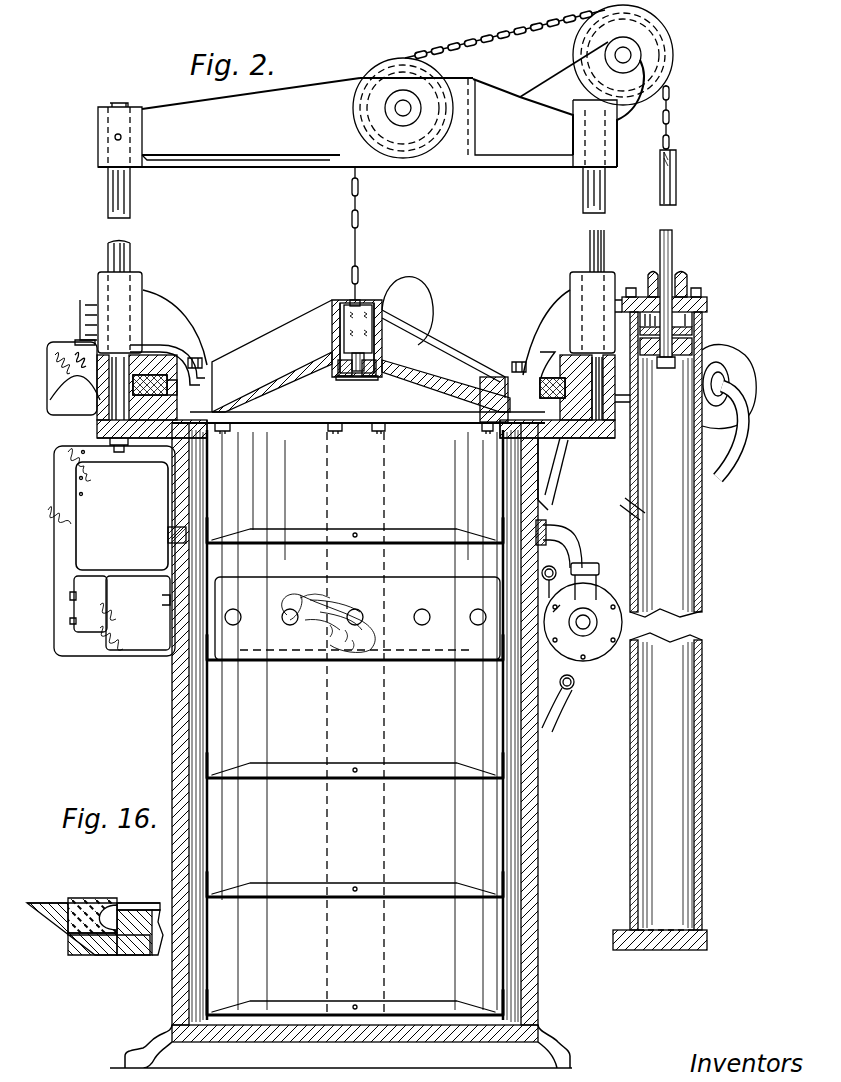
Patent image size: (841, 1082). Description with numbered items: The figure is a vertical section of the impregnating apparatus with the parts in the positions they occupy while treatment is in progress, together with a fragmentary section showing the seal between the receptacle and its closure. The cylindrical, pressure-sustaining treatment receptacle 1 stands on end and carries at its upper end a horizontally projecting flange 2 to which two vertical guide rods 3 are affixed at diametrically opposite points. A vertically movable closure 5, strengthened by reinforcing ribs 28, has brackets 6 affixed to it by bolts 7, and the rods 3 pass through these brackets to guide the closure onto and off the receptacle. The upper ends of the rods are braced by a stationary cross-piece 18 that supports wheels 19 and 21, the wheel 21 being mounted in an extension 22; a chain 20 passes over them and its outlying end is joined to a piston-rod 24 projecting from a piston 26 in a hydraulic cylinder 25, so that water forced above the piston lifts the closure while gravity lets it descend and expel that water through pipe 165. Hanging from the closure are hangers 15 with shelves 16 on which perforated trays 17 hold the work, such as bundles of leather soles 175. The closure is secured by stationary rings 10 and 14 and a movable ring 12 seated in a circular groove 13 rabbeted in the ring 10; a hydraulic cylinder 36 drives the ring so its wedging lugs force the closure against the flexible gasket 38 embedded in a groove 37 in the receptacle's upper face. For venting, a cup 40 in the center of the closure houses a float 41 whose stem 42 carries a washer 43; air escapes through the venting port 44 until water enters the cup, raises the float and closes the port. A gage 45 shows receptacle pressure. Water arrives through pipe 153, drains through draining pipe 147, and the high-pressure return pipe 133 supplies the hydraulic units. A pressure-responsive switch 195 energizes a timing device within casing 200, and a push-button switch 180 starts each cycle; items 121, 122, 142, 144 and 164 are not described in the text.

In FIG. 2, the treatment receptacle 1 is at (540, 815).
In FIG. 16, the treatment receptacle 1 is at (143, 910).
In FIG. 2, the flange 2 is at (142, 438).
In FIG. 16, the flange 2 is at (32, 903).
In FIG. 2, the guide rods 3 is at (110, 258).
In FIG. 2, the closure 5 is at (285, 385).
In FIG. 2, the brackets 6 is at (160, 313).
In FIG. 2, the bolts 7 is at (204, 358).
In FIG. 2, the stationary ring 10 is at (80, 410).
In FIG. 2, the movable ring 12 is at (180, 360).
In FIG. 2, the circular groove 13 is at (565, 480).
In FIG. 2, the stationary ring 14 is at (165, 350).
In FIG. 2, the hangers 15 is at (215, 468).
In FIG. 2, the shelves 16 is at (480, 540).
In FIG. 2, the perforated trays 17 is at (410, 588).
In FIG. 2, the cross-piece 18 is at (182, 112).
In FIG. 2, the wheel 19 is at (392, 58).
In FIG. 2, the chain 20 is at (351, 196).
In FIG. 2, the wheel 21 is at (650, 40).
In FIG. 2, the extension 22 is at (560, 78).
In FIG. 2, the piston-rod 24 is at (677, 178).
In FIG. 2, the hydraulic cylinder 25 is at (704, 540).
In FIG. 2, the piston 26 is at (704, 343).
In FIG. 2, the reinforcing ribs 28 is at (318, 322).
In FIG. 2, the hydraulic cylinder 36 is at (733, 365).
In FIG. 2, the groove 37 is at (540, 450).
In FIG. 16, the groove 37 is at (86, 940).
In FIG. 2, the flexible gasket 38 is at (560, 470).
In FIG. 16, the flexible gasket 38 is at (86, 900).
In FIG. 2, the cup 40 is at (378, 310).
In FIG. 2, the float 41 is at (360, 302).
In FIG. 2, the stem 42 is at (380, 350).
In FIG. 2, the washer 43 is at (370, 377).
In FIG. 2, the venting port 44 is at (348, 378).
In FIG. 2, the gage 45 is at (426, 310).
In FIG. 2, the bracket 121 is at (78, 340).
In FIG. 2, the terminal 122 is at (88, 315).
In FIG. 2, the return pipe 133 is at (566, 720).
In FIG. 2, the pump inlet 142 is at (590, 582).
In FIG. 2, the pump 144 is at (596, 660).
In FIG. 2, the draining pipe 147 is at (577, 642).
In FIG. 2, the pipe 153 is at (575, 540).
In FIG. 2, the hose 164 is at (748, 430).
In FIG. 2, the pipe 165 is at (642, 290).
In FIG. 2, the bundles of leather soles 175 is at (335, 615).
In FIG. 2, the push-button switch 180 is at (72, 613).
In FIG. 2, the pressure-responsive switch 195 is at (83, 522).
In FIG. 2, the casing 200 is at (56, 565).